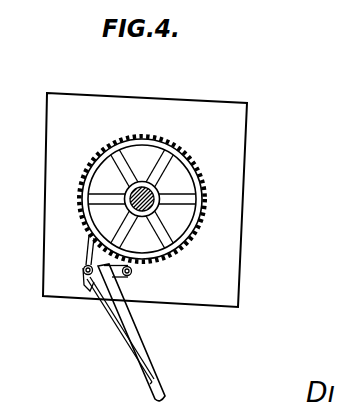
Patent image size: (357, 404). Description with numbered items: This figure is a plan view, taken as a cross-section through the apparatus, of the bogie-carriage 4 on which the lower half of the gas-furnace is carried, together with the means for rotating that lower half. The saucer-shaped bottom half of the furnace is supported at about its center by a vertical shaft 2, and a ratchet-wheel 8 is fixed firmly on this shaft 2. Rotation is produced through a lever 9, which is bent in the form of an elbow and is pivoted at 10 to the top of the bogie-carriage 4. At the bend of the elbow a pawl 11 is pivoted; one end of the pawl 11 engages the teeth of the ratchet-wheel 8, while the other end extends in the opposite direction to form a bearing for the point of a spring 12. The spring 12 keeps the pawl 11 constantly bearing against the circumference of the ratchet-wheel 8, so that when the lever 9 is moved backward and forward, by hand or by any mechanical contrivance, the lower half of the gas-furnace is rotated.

The bogie-carriage 4 is at (145, 200).
The vertical shaft 2 is at (152, 195).
The ratchet-wheel 8 is at (170, 156).
The pawl 11 is at (86, 267).
The spring 12 is at (100, 298).
The pivot of lever 10 is at (120, 278).
The lever 9 is at (125, 331).